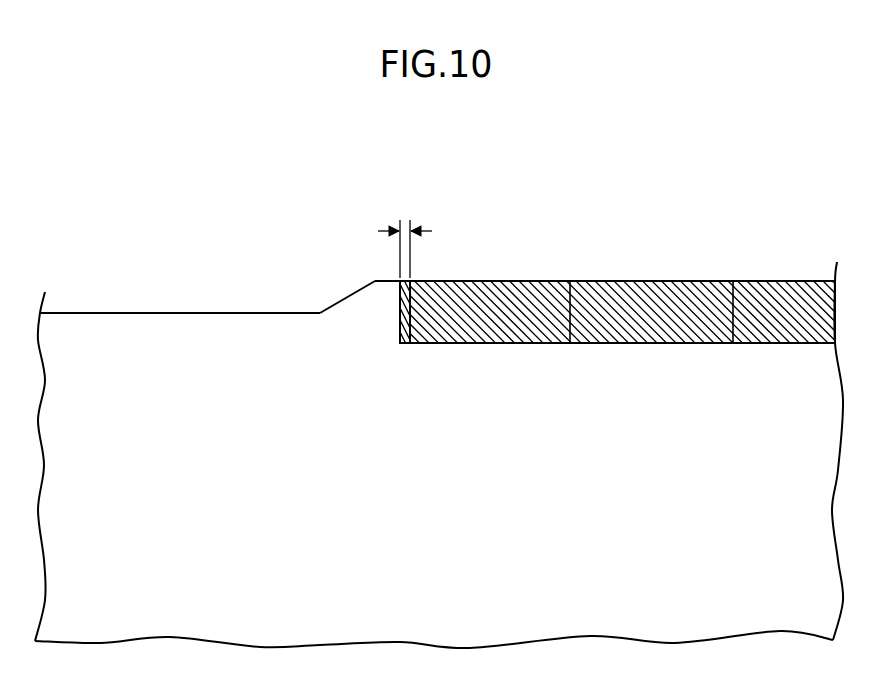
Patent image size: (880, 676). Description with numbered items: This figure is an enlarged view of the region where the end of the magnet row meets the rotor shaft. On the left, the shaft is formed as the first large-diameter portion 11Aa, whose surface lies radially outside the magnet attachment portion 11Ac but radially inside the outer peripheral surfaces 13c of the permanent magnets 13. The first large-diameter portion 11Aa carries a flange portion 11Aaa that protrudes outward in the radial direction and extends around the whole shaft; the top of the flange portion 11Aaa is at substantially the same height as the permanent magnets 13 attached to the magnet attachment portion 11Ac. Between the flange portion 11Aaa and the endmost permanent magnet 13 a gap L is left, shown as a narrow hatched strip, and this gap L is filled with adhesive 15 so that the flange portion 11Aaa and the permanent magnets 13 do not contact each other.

The first large-diameter portion 11Aa is at (107, 313).
The flange portion 11Aaa is at (340, 300).
The adhesive 15 is at (397, 298).
The gap L is at (410, 222).
The permanent magnets 13 is at (541, 279).
The outer peripheral surfaces 13c is at (502, 280).
The magnet attachment portion 11Ac is at (660, 342).